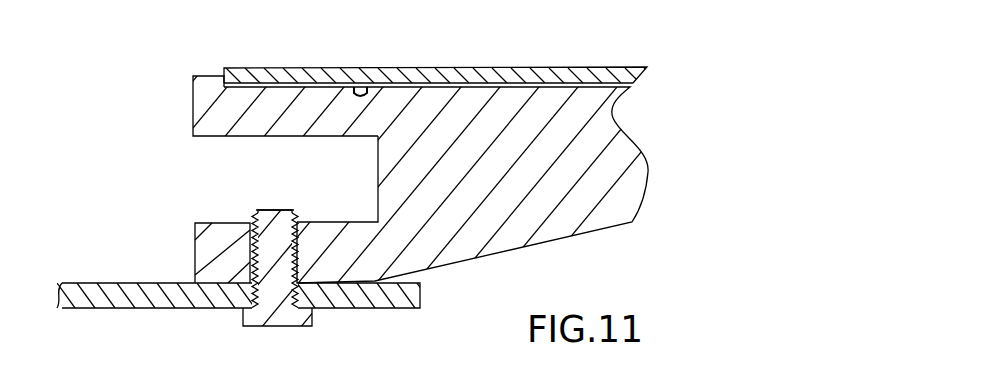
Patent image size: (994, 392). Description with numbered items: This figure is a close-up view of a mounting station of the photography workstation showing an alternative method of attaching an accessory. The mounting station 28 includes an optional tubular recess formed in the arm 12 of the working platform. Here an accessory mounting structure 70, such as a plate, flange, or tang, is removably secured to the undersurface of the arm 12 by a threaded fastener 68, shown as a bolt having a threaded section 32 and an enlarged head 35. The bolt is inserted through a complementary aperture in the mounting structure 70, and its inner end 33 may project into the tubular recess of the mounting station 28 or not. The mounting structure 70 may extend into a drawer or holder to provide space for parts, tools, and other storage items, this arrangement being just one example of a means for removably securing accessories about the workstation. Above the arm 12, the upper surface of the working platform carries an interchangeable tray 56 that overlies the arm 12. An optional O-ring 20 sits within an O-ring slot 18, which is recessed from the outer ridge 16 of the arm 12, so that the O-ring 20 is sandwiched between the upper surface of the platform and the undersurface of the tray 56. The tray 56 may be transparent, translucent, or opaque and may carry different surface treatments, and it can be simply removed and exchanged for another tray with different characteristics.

The arm 12 is at (580, 225).
The outer ridge 16 is at (221, 83).
The O-ring slot 18 is at (364, 92).
The O-ring 20 is at (357, 86).
The mounting station 28 is at (208, 222).
The threaded section 32 is at (299, 232).
The inner end 33 is at (283, 209).
The enlarged head 35 is at (298, 329).
The interchangeable tray 56 is at (417, 76).
The threaded fastener 68 is at (274, 210).
The accessory mounting structure 70 is at (188, 310).